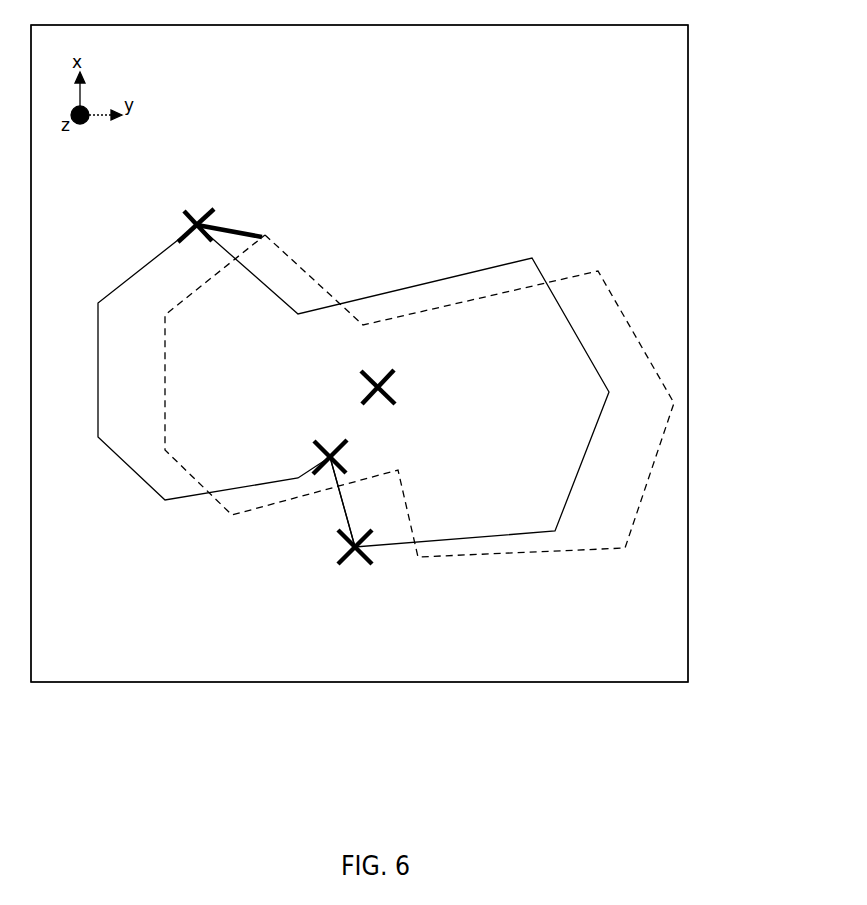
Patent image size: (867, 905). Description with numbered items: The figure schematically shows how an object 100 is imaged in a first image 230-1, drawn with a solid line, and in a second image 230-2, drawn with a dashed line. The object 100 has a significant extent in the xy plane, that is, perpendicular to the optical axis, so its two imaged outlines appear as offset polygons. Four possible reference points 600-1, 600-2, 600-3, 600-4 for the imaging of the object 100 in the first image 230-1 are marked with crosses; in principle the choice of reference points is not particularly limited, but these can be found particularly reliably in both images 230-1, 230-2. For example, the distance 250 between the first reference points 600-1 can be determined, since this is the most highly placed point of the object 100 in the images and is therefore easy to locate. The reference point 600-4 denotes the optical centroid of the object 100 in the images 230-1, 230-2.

The object 100 is at (165, 500).
The distance 250 is at (250, 235).
The first image 230-1 is at (687, 670).
The second image 230-2 is at (397, 375).
The first reference point 600-1 is at (187, 213).
The reference point 600-2 is at (308, 437).
The reference point 600-3 is at (373, 528).
The reference point 600-4 is at (418, 350).